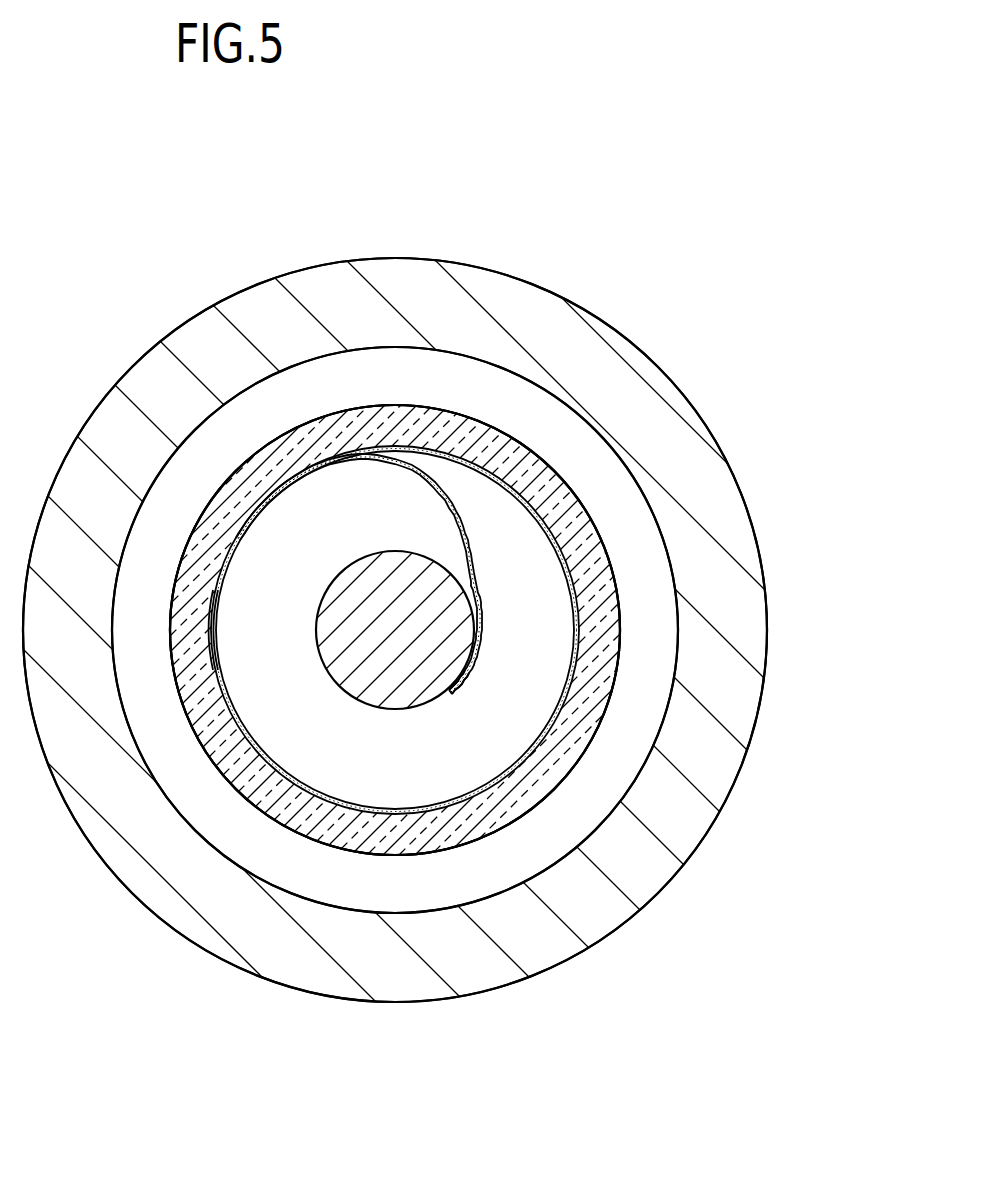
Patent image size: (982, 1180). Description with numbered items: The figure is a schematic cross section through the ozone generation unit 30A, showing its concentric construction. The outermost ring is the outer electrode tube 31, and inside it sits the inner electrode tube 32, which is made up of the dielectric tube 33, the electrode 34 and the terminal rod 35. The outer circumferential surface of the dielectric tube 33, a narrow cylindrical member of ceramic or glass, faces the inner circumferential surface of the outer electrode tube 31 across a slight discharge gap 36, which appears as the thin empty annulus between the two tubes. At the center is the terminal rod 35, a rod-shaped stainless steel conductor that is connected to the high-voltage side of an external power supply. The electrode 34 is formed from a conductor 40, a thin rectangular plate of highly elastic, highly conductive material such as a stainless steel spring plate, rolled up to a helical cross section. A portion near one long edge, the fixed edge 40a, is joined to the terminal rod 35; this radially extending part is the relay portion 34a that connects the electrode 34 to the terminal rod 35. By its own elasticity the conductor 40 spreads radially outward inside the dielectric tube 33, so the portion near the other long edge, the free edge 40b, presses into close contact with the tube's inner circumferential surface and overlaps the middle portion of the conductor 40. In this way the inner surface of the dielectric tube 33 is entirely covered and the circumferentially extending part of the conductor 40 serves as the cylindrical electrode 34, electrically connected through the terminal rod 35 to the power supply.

The ozone generation unit 30A is at (412, 200).
The outer electrode tube 31 is at (717, 765).
The inner electrode tube 32 is at (622, 628).
The dielectric tube 33 is at (530, 793).
The electrode 34 is at (490, 468).
The relay portion 34a is at (470, 543).
The terminal rod 35 is at (367, 587).
The discharge gap 36 is at (167, 503).
The conductor 40 is at (541, 509).
The fixed edge 40a is at (453, 692).
The free edge 40b is at (220, 617).